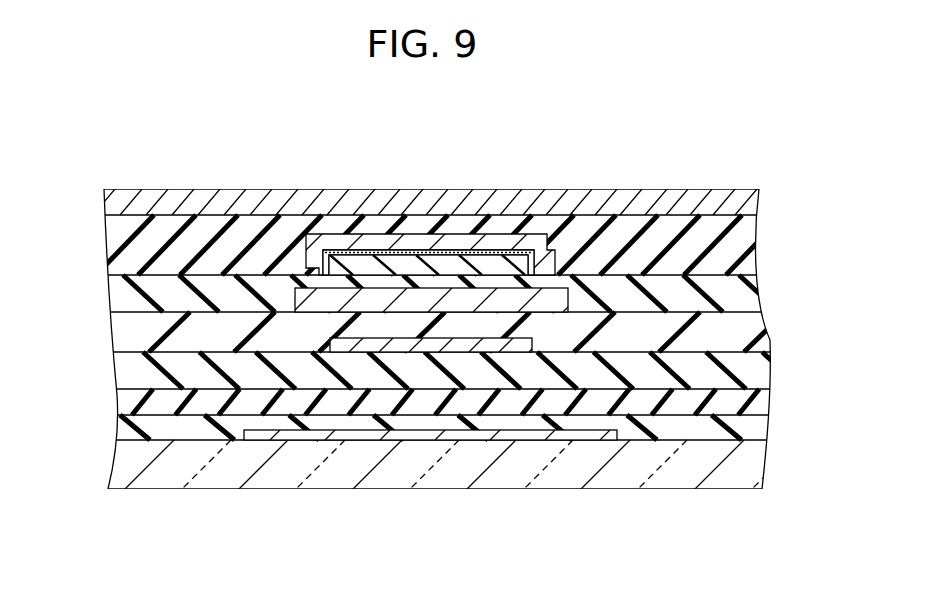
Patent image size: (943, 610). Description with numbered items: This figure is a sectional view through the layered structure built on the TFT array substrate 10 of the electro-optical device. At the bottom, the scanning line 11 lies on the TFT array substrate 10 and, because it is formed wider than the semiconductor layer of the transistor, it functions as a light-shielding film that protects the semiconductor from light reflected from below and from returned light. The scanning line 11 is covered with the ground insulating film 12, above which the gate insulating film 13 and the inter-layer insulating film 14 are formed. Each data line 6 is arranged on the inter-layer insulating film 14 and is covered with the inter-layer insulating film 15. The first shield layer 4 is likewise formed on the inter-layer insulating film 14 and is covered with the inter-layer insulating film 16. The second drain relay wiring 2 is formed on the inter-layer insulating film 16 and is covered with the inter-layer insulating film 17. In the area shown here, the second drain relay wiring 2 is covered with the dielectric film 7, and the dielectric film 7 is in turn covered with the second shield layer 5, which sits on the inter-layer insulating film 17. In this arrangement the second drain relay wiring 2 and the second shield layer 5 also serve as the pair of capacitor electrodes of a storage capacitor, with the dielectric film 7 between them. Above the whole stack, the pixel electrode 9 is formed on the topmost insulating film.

The second drain relay wiring 2 is at (497, 270).
The first shield layer 4 is at (299, 295).
The second shield layer 5 is at (455, 253).
The data line 6 is at (369, 346).
The dielectric film 7 is at (413, 248).
The pixel electrode 9 is at (376, 200).
The TFT array substrate 10 is at (628, 466).
The scanning line 11 is at (495, 435).
The ground insulating film 12 is at (748, 427).
The gate insulating film 13 is at (748, 399).
The inter-layer insulating film 14 is at (748, 370).
The inter-layer insulating film 15 is at (748, 331).
The inter-layer insulating film 16 is at (748, 292).
The inter-layer insulating film 17 is at (748, 235).